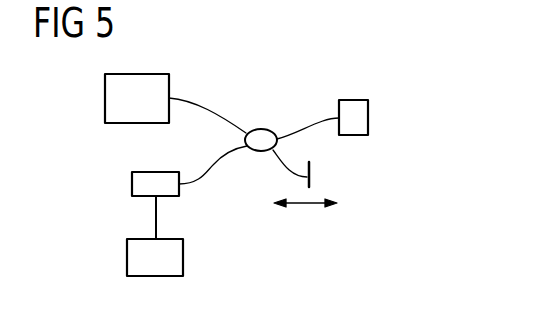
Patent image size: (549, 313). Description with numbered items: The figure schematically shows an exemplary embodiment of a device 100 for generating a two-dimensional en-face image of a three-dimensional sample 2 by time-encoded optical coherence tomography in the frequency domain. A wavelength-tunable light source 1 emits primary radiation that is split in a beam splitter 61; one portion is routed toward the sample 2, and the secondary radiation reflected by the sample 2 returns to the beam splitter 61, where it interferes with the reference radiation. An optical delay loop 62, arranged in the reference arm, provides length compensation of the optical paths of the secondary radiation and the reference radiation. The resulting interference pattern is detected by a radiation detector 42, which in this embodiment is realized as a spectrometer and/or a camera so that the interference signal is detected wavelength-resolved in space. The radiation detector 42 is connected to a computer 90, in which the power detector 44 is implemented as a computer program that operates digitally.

The device 100 is at (384, 54).
The wavelength-tunable light source 1 is at (105, 98).
The beam splitter 61 is at (264, 129).
The sample 2 is at (368, 118).
The radiation detector 42 is at (132, 183).
The computer 90 is at (106, 257).
The power detector 44 is at (127, 257).
The optical delay loop 62 is at (306, 206).